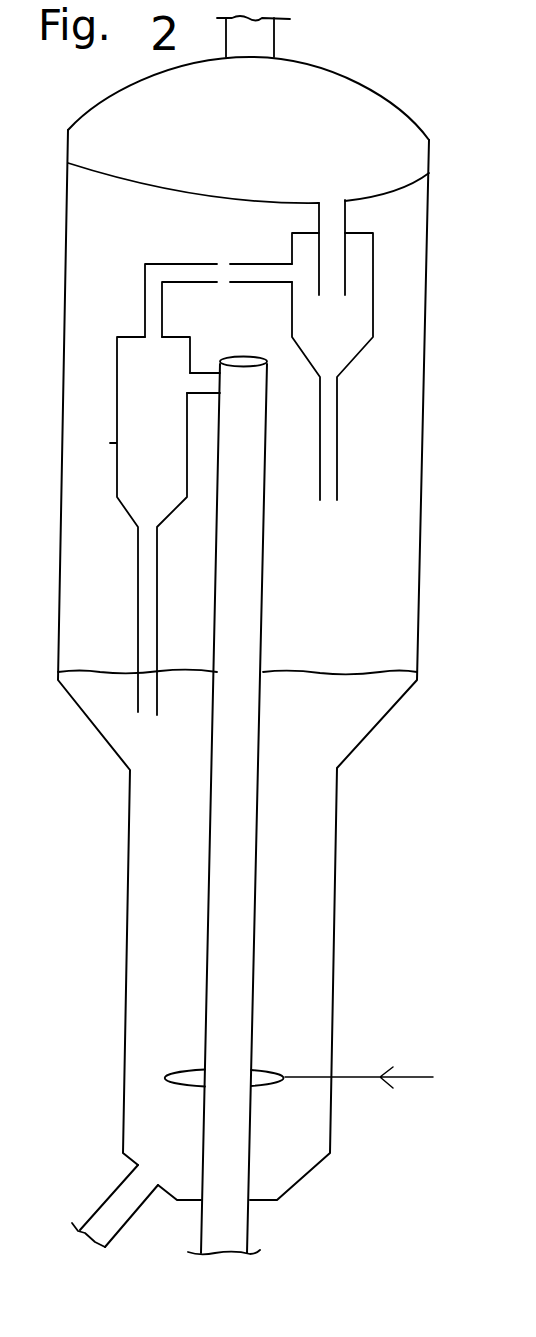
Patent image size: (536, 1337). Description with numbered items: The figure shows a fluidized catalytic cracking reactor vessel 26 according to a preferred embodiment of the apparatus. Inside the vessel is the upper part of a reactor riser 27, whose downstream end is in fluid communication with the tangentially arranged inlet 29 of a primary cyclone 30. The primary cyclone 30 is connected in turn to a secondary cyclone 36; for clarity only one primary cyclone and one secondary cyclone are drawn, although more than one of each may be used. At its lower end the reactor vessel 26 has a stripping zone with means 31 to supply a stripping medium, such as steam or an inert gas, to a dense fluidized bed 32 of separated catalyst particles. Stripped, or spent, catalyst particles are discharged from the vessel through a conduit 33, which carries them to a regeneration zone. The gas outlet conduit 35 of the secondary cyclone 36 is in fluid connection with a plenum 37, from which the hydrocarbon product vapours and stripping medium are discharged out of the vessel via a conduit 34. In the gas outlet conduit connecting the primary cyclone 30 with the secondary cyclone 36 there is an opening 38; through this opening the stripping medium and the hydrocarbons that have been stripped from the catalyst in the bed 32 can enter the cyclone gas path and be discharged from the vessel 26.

The FCC reactor vessel 26 is at (421, 473).
The reactor riser 27 is at (258, 605).
The tangentially arranged inlet 29 is at (193, 371).
The primary cyclone 30 is at (159, 466).
The means to supply a stripping medium 31 is at (185, 1068).
The dense fluidized bed 32 is at (188, 797).
The conduit 33 is at (122, 1198).
The conduit 34 is at (263, 37).
The gas outlet conduit 35 is at (345, 218).
The secondary cyclone 36 is at (373, 283).
The plenum 37 is at (291, 137).
The opening 38 is at (229, 264).